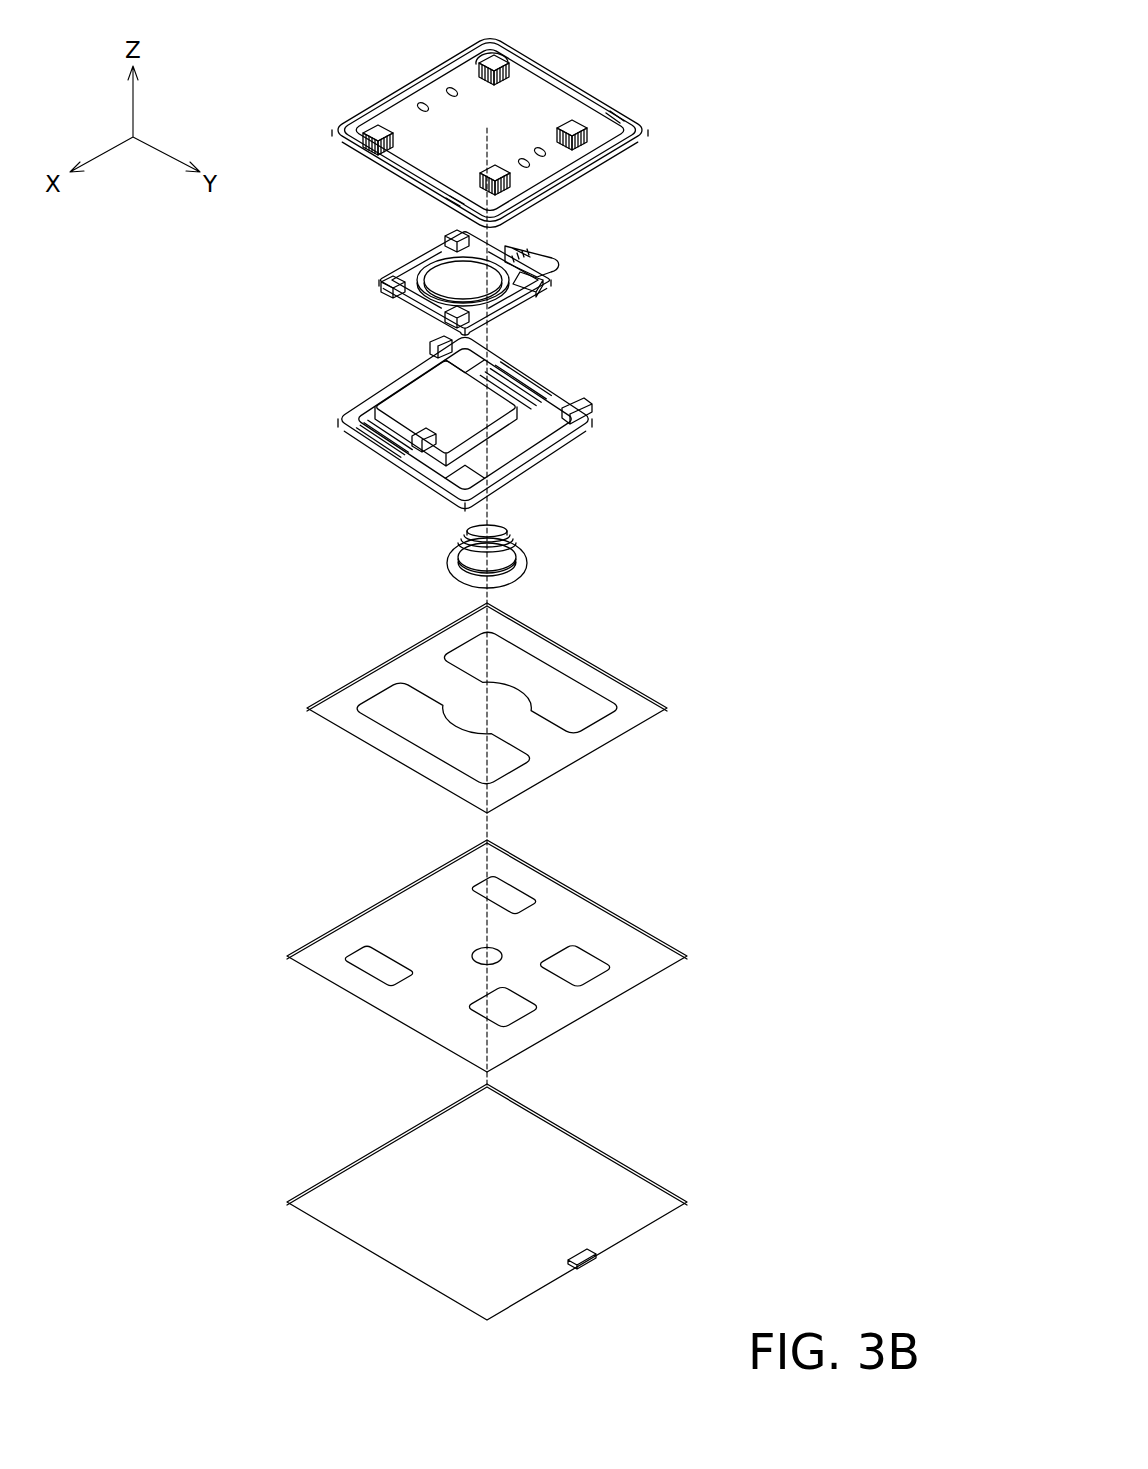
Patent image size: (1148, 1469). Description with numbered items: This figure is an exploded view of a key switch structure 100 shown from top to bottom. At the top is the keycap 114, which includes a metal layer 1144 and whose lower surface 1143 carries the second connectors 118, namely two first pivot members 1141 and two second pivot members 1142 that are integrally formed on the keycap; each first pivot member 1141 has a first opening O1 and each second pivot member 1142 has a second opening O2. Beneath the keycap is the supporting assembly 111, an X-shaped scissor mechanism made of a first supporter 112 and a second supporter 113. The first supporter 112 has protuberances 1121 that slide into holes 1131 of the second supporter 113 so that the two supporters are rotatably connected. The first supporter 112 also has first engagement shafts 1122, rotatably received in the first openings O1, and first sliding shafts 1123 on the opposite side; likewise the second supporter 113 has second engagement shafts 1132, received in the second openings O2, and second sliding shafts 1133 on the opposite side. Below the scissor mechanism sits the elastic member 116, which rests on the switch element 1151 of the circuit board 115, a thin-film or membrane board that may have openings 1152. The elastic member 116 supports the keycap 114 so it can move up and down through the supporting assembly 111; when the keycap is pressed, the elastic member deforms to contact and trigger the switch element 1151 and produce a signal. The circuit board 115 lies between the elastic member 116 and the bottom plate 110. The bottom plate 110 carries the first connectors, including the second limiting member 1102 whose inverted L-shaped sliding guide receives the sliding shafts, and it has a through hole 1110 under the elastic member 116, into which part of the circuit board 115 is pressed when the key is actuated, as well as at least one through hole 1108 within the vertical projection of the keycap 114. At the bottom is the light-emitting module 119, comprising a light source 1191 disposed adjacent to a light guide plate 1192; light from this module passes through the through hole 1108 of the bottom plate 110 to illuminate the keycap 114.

The key switch structure 100 is at (275, 31).
The bottom plate 110 is at (539, 957).
The supporting assembly 111 is at (766, 250).
The first supporter 112 is at (563, 270).
The second supporter 113 is at (551, 415).
The keycap 114 is at (539, 122).
The circuit board 115 is at (550, 709).
The elastic member 116 is at (559, 556).
The second connectors 118 is at (900, 216).
The light-emitting module 119 is at (555, 1203).
The second limiting member 1102 is at (503, 1007).
The through hole 1108 is at (575, 966).
The through hole 1110 is at (487, 956).
The protuberances 1121 is at (530, 249).
The first engagement shafts 1122 is at (543, 285).
The first sliding shafts 1123 is at (452, 238).
The holes 1131 is at (458, 416).
The second engagement shafts 1132 is at (441, 347).
The second sliding shafts 1133 is at (577, 420).
The first pivot members 1141 is at (580, 150).
The second pivot members 1142 is at (492, 56).
The lower surface 1143 is at (547, 101).
The metal layer 1144 is at (529, 92).
The switch element 1151 is at (530, 683).
The openings 1152 is at (521, 698).
The light source 1191 is at (588, 1260).
The light guide plate 1192 is at (586, 1152).
The first opening O1 is at (613, 113).
The second opening O2 is at (503, 63).